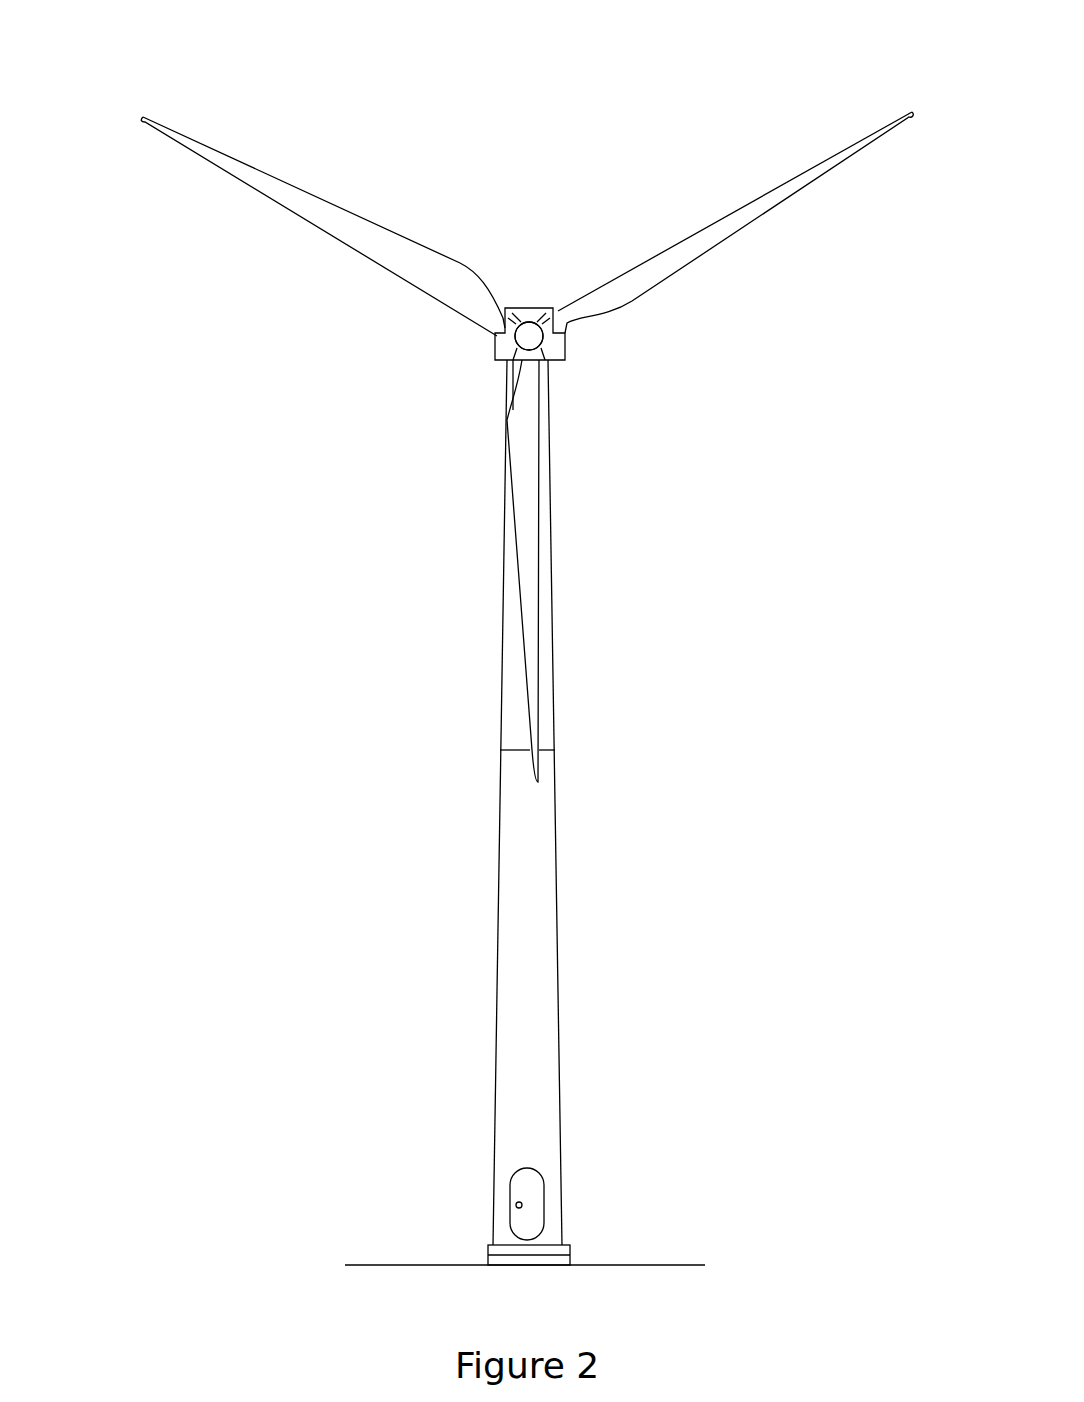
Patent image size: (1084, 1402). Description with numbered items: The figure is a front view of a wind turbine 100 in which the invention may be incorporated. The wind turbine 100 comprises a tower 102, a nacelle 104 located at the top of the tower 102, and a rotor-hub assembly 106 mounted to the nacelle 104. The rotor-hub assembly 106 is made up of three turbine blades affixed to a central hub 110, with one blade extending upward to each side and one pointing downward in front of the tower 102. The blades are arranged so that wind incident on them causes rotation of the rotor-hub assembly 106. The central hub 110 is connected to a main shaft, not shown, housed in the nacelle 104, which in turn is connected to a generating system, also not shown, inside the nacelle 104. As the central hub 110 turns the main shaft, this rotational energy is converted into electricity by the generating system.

The wind turbine 100 is at (146, 102).
The tower 102 is at (528, 940).
The nacelle 104 is at (550, 350).
The rotor-hub assembly 106 is at (527, 301).
The central hub 110 is at (529, 336).